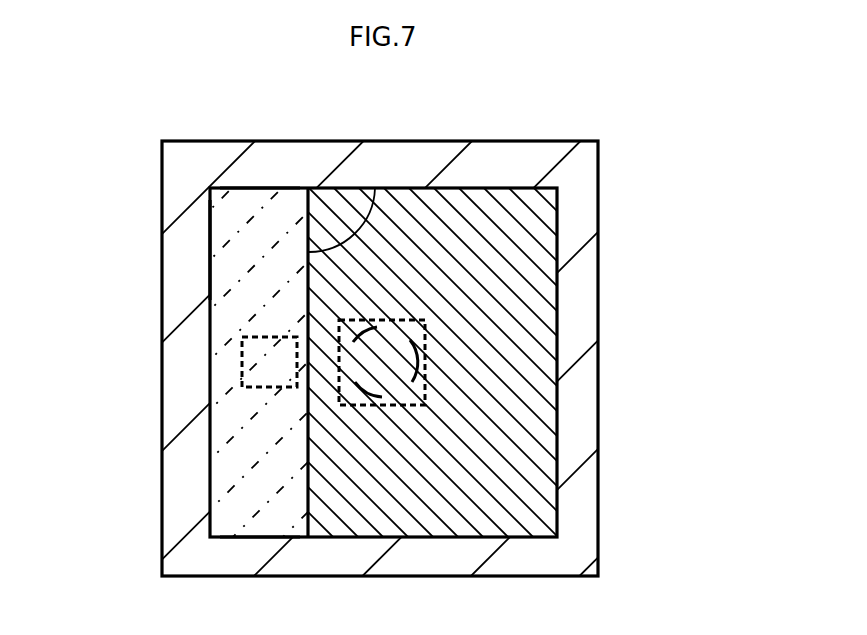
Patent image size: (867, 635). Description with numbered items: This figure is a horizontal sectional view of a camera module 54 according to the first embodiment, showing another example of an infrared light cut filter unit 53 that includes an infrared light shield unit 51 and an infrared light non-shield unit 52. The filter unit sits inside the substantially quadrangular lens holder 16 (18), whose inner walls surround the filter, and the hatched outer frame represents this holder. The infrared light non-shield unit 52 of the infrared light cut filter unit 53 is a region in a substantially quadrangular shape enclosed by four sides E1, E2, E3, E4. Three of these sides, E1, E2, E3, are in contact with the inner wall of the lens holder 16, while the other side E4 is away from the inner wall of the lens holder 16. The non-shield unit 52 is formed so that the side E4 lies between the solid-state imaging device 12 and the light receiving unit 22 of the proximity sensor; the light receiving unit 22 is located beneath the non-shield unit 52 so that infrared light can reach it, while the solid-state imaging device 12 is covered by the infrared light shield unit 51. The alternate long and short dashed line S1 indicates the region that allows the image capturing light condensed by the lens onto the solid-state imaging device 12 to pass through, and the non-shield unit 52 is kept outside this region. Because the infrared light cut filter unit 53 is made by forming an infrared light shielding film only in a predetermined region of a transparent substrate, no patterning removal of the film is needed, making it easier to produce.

The camera module 54 is at (433, 320).
The lens holder 16 is at (433, 358).
The outer peripheral portion 18 is at (580, 229).
The solid-state imaging device 12 is at (425, 342).
The light receiving unit 22 is at (242, 349).
The alternate long and short dashed line S1 is at (415, 382).
The infrared light cut filter unit 53 is at (433, 362).
The infrared light non-shield unit 52 is at (263, 436).
The infrared light shield unit 51 is at (342, 500).
The side E1 is at (209, 252).
The side E2 is at (264, 188).
The side E3 is at (257, 539).
The side E4 is at (375, 188).